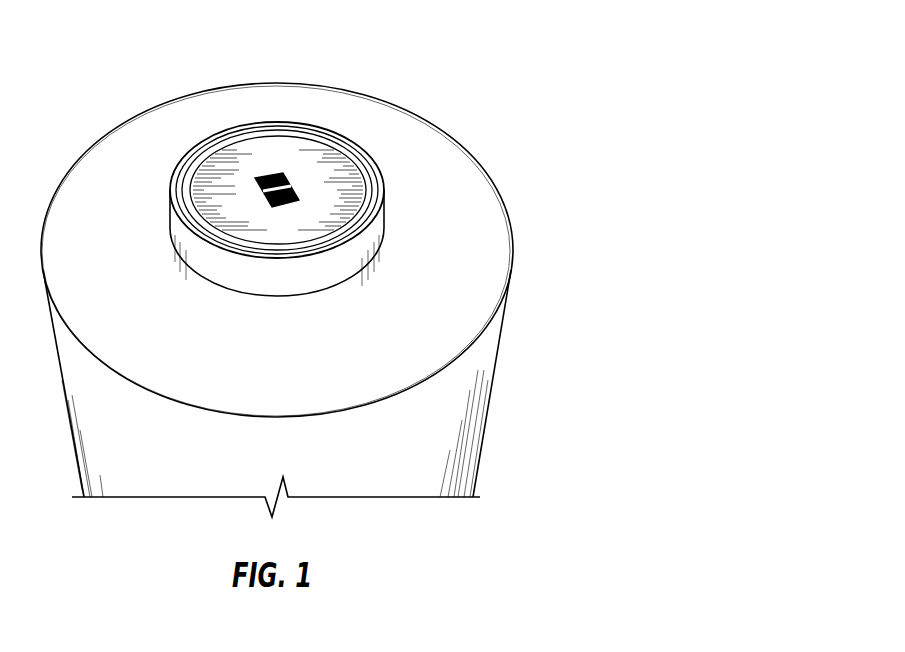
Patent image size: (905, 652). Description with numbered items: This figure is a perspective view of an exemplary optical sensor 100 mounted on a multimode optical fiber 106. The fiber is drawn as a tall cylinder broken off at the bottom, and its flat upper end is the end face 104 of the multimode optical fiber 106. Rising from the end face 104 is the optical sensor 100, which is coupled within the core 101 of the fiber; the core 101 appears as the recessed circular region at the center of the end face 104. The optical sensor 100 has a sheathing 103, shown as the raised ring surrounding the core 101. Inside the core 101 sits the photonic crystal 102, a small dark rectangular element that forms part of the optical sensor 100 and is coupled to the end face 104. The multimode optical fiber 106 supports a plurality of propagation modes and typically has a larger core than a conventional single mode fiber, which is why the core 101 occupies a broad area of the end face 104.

The optical sensor 100 is at (474, 66).
The core 101 is at (210, 168).
The photonic crystal 102 is at (288, 176).
The sheathing 103 is at (185, 248).
The end face 104 is at (350, 110).
The multimode optical fiber 106 is at (483, 412).